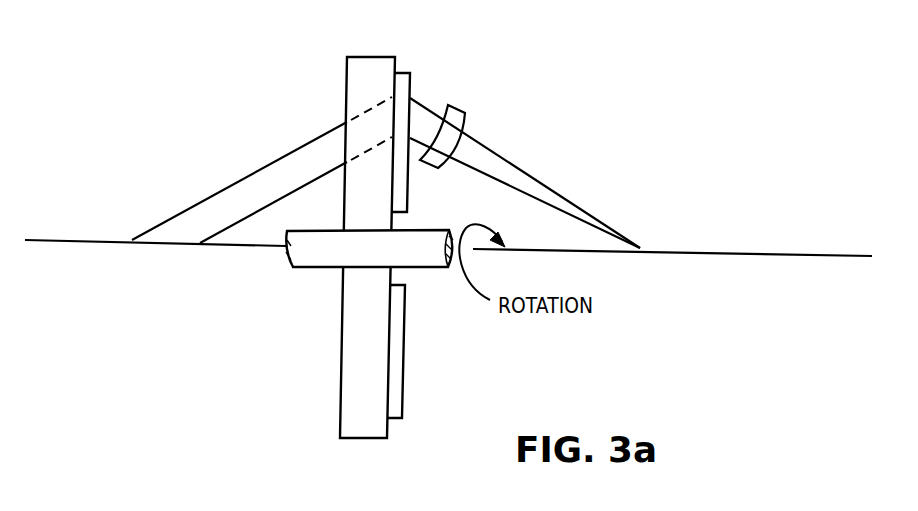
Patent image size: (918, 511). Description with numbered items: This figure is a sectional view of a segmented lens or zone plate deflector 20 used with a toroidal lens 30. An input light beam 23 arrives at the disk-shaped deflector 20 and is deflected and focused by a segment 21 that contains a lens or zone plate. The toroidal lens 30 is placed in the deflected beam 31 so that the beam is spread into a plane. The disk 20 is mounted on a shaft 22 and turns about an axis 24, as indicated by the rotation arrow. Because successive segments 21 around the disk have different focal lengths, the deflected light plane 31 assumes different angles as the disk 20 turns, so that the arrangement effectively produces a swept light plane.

The lens or zone plate deflector 20 is at (376, 57).
The segment 21 is at (408, 190).
The shaft 22 is at (425, 268).
The input light beam 23 is at (262, 171).
The axis 24 is at (98, 242).
The toroidal lens 30 is at (450, 108).
The deflected beam 31 is at (518, 165).